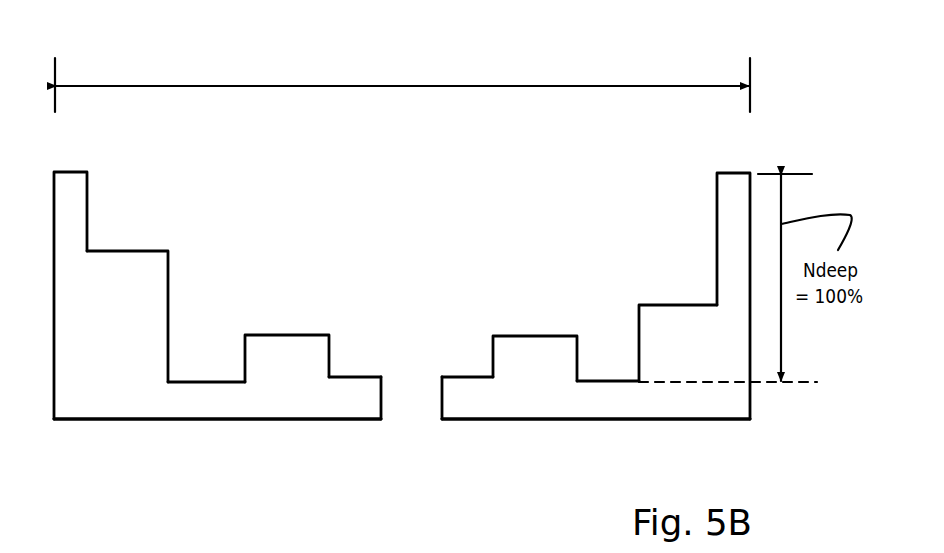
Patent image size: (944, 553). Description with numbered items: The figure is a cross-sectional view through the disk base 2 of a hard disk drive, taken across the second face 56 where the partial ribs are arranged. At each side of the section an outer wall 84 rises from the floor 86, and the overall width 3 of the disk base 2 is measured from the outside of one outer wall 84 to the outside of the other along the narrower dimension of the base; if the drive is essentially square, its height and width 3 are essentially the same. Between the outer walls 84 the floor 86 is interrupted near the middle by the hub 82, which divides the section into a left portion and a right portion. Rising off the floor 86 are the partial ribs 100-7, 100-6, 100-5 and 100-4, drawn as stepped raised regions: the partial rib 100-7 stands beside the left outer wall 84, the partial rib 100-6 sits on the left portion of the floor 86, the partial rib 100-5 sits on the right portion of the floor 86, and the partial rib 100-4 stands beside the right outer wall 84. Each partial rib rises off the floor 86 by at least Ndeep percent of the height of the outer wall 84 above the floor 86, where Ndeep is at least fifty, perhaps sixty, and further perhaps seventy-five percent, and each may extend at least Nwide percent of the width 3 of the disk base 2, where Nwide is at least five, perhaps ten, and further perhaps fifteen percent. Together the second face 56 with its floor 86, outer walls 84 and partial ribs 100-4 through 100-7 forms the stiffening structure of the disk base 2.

The width 3 is at (250, 26).
The outer wall 84 is at (738, 176).
The floor 86 is at (205, 384).
The hub 82 is at (411, 391).
The second face 56 is at (752, 434).
The disk base 2 is at (402, 481).
The partial rib 100-7 is at (152, 257).
The partial rib 100-6 is at (314, 336).
The partial rib 100-5 is at (560, 340).
The partial rib 100-4 is at (652, 308).